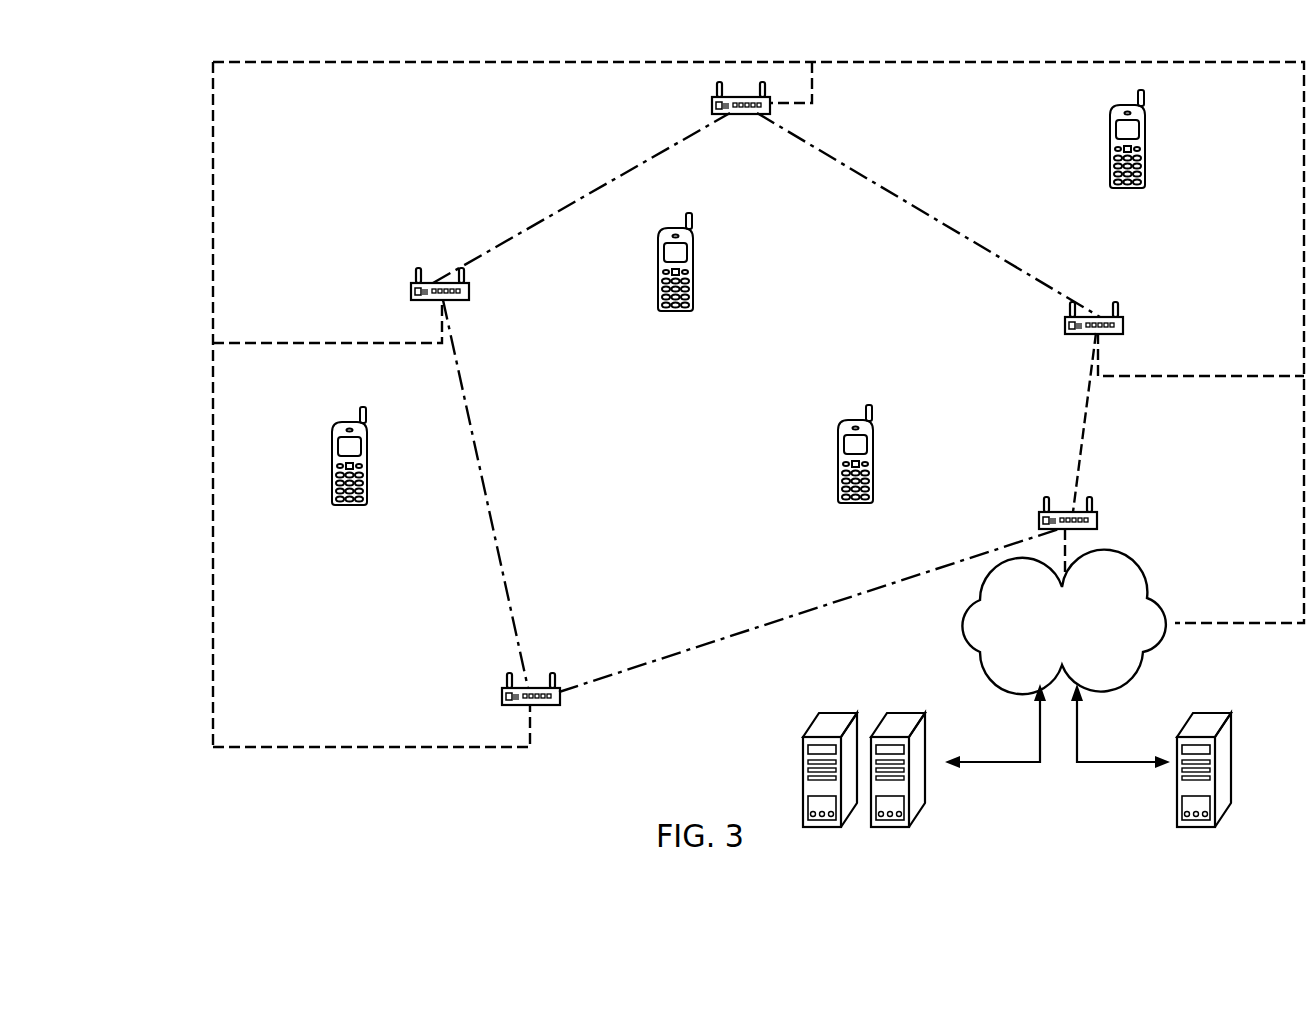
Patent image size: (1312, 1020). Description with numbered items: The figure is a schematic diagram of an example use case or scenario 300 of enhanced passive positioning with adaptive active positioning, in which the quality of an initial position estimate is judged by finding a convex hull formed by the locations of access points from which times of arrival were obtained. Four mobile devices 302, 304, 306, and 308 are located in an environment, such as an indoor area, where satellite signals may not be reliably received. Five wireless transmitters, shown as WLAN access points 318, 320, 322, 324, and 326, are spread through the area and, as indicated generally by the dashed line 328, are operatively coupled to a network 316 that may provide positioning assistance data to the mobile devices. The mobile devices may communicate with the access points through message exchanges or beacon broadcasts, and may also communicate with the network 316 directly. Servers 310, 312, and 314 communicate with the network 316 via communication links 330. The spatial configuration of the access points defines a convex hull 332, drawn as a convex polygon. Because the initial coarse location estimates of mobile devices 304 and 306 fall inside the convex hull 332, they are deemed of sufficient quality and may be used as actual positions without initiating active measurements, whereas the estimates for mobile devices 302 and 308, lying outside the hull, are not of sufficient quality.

The example use case or scenario 300 is at (180, 104).
The mobile device 302 is at (332, 452).
The mobile device 304 is at (658, 256).
The mobile device 306 is at (838, 448).
The mobile device 308 is at (1110, 136).
The server 310 is at (836, 712).
The server 312 is at (900, 712).
The server 314 is at (1213, 712).
The network 316 is at (1162, 600).
The WLAN access point 318 is at (502, 690).
The WLAN access point 320 is at (413, 288).
The WLAN access point 322 is at (712, 100).
The WLAN access point 324 is at (1123, 320).
The WLAN access point 326 is at (1097, 515).
The dashed line 328 is at (412, 64).
The communication links 330 is at (1097, 765).
The convex hull 332 is at (494, 522).